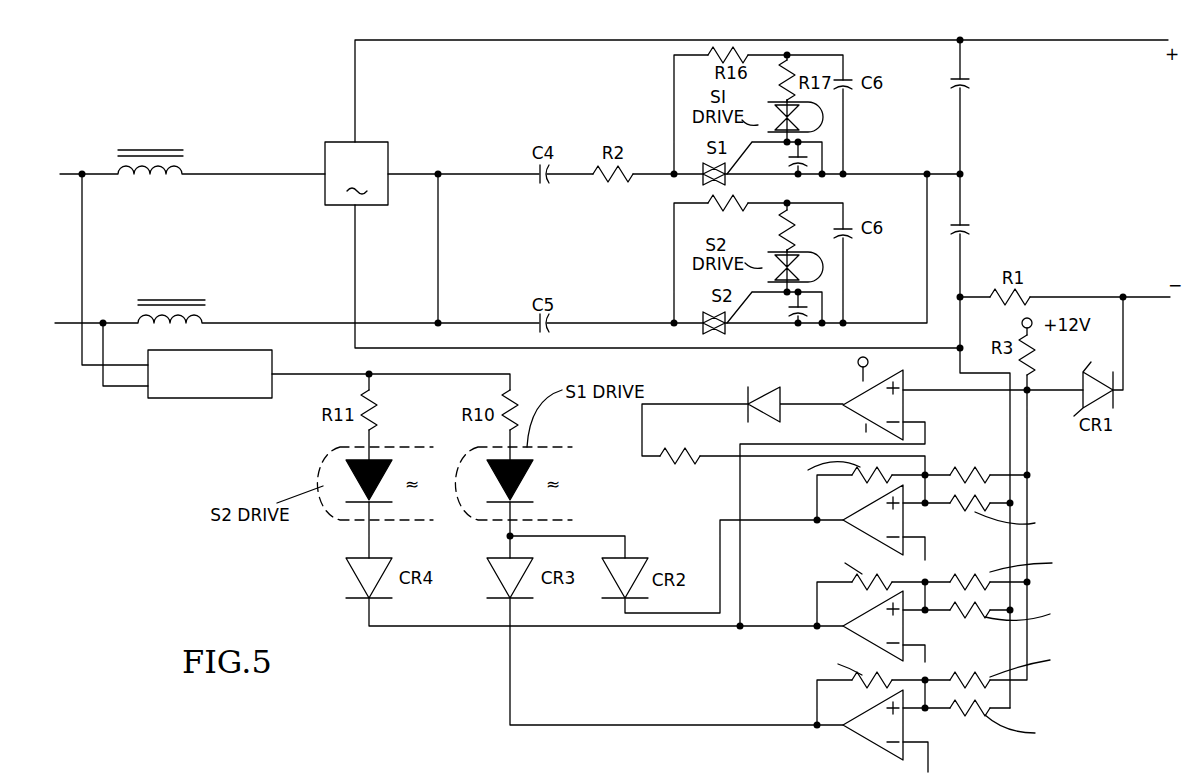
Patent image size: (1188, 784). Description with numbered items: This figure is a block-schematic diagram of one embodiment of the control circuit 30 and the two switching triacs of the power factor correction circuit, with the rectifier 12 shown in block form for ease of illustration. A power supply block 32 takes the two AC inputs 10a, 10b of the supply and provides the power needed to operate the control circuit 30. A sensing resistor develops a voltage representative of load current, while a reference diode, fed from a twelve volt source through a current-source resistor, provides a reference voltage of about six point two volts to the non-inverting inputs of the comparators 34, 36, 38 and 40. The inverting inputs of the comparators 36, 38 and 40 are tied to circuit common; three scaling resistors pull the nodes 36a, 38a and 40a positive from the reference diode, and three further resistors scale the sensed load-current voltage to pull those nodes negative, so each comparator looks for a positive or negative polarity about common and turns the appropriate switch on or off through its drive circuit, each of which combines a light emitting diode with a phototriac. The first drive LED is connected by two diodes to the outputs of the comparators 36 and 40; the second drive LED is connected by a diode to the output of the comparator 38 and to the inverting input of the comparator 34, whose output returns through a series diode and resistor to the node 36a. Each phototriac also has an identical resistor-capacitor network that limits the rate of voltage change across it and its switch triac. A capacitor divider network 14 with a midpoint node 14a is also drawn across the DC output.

The input 10a is at (82, 165).
The input 10b is at (103, 322).
The rectifier 12 is at (356, 173).
The DC supply / capacitor divider 14 is at (1040, 130).
The midpoint node of capacitor divider 14a is at (962, 175).
The control circuit 30 is at (597, 440).
The power supply block 32 is at (264, 364).
The comparator 34 is at (873, 415).
The comparator 36 is at (873, 530).
The node 36a is at (925, 473).
The comparator 38 is at (873, 636).
The node 38a is at (928, 580).
The comparator 40 is at (873, 735).
The node 40a is at (928, 680).